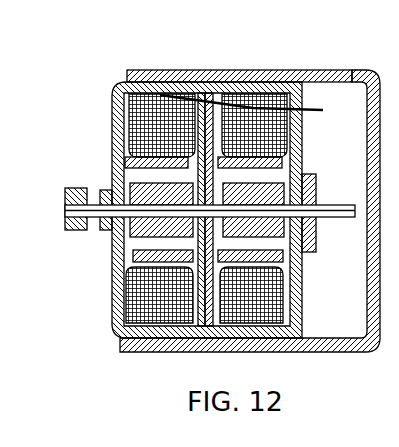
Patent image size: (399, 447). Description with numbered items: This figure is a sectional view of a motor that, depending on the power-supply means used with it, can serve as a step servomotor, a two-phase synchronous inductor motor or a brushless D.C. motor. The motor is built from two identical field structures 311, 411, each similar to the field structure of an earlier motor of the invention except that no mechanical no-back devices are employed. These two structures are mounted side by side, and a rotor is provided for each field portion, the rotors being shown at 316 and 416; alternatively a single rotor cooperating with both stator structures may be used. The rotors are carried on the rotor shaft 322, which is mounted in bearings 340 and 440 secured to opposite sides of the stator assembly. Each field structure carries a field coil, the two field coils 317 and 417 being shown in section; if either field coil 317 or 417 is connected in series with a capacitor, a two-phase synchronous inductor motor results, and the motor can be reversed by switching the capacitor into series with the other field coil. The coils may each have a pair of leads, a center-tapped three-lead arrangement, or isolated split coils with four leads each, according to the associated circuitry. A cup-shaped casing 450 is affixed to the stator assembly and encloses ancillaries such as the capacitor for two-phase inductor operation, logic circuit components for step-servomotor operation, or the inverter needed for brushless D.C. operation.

The field structure 311 is at (117, 110).
The rotor 316 is at (135, 240).
The field coil 317 is at (142, 100).
The rotor shaft 322 is at (358, 218).
The bearing 340 is at (104, 192).
The field structure 411 is at (309, 88).
The rotor 416 is at (298, 255).
The field coil 417 is at (268, 102).
The bearing 440 is at (309, 176).
The cup-shaped casing 450 is at (205, 72).